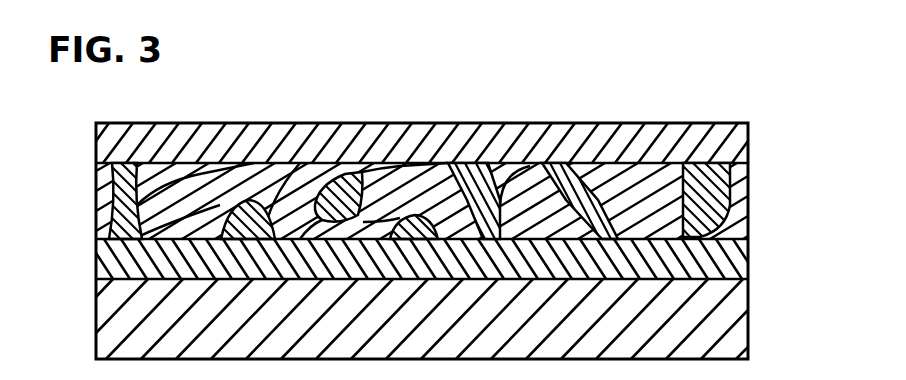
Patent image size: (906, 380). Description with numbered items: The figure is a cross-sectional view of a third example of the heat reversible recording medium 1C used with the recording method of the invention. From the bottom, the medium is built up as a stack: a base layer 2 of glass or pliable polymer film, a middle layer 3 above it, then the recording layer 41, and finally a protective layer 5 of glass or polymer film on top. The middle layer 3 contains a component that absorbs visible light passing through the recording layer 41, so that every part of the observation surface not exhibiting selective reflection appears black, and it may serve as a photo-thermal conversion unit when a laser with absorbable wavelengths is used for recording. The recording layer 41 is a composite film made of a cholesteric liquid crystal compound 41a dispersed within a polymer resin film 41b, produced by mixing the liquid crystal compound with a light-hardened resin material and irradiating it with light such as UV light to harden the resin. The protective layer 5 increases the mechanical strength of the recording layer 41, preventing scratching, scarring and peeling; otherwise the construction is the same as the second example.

The heat reversible recording medium 1C is at (262, 70).
The base layer 2 is at (743, 327).
The middle layer 3 is at (743, 257).
The protective layer 5 is at (740, 141).
The recording layer 41 is at (755, 160).
The cholesteric liquid crystal compound 41a is at (392, 177).
The polymer resin film 41b is at (487, 178).